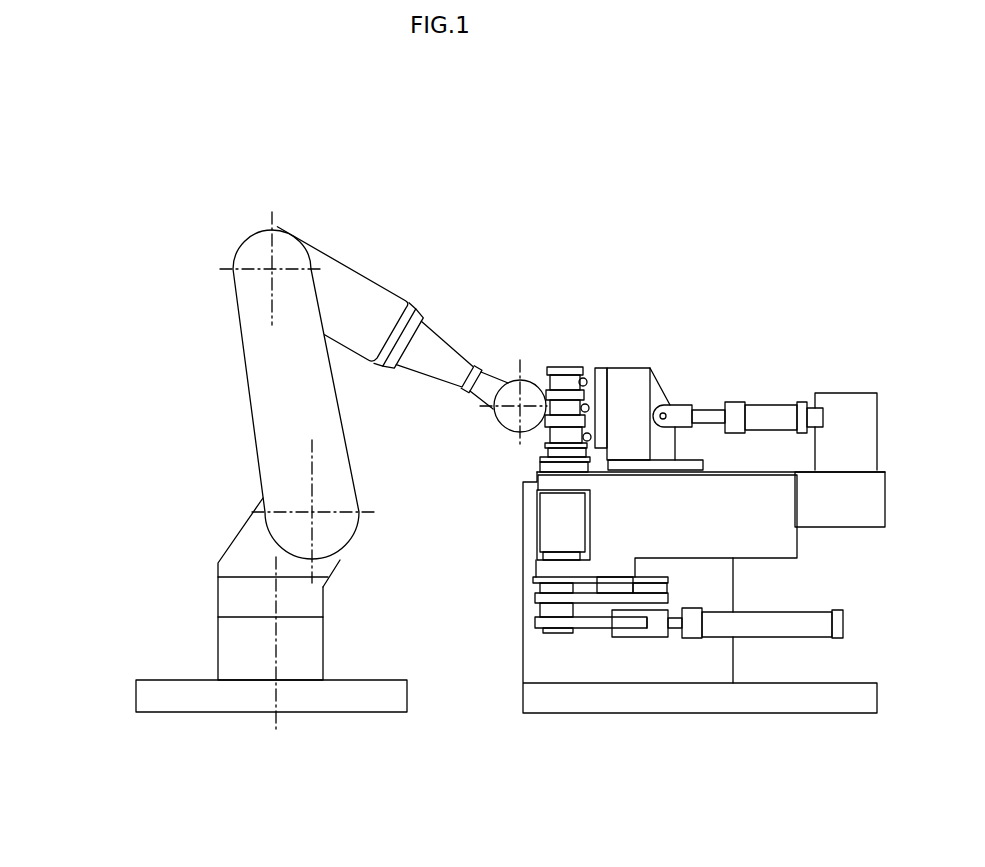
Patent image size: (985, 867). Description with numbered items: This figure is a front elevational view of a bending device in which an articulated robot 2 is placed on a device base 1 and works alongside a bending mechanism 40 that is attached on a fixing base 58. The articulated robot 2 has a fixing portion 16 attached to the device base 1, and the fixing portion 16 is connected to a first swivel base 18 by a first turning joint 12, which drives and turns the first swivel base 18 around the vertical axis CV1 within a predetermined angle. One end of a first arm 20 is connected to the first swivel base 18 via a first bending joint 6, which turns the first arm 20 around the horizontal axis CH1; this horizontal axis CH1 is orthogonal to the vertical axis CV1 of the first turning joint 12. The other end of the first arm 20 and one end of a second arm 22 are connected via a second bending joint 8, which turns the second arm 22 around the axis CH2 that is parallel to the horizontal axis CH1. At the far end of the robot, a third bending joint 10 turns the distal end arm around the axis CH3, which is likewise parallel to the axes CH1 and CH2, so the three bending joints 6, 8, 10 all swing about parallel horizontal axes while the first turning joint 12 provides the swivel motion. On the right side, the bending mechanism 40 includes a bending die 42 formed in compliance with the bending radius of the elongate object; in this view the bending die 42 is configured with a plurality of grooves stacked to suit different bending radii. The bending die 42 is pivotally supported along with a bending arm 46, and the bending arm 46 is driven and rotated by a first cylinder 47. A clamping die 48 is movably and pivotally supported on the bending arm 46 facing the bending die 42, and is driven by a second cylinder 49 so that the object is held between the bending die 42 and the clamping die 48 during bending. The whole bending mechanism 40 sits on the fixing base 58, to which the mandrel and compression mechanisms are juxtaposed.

The device base 1 is at (178, 702).
The articulated robot 2 is at (228, 340).
The first bending joint 6 is at (228, 487).
The second bending joint 8 is at (320, 225).
The third bending joint 10 is at (527, 352).
The first turning joint 12 is at (215, 613).
The fixing portion 16 is at (248, 655).
The first swivel base 18 is at (248, 593).
The first arm 20 is at (281, 418).
The second arm 22 is at (360, 318).
The bending mechanism 40 is at (687, 385).
The bending die 42 is at (568, 372).
The bending arm 46 is at (785, 542).
The first cylinder 47 is at (798, 630).
The clamping die 48 is at (618, 383).
The second cylinder 49 is at (768, 415).
The fixing base 58 is at (547, 663).
The horizontal axis CH1 is at (311, 510).
The axis CH2 is at (272, 269).
The axis CH3 is at (520, 406).
The vertical axis CV1 is at (276, 568).